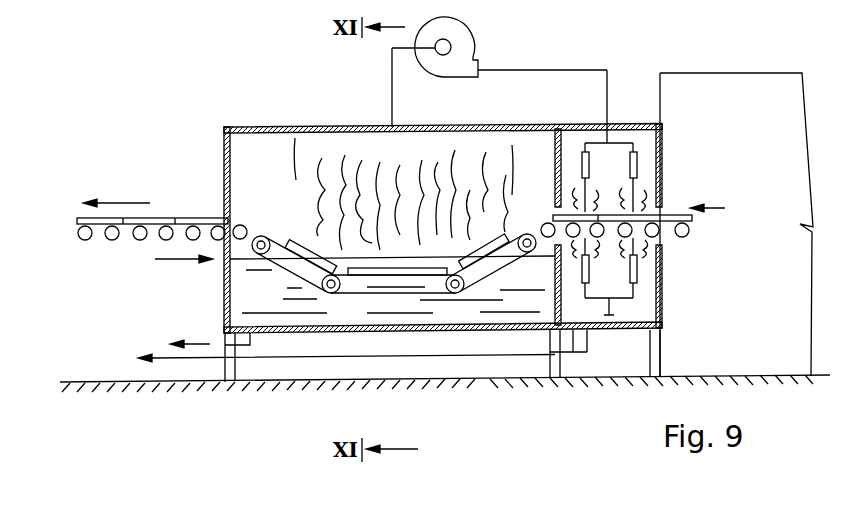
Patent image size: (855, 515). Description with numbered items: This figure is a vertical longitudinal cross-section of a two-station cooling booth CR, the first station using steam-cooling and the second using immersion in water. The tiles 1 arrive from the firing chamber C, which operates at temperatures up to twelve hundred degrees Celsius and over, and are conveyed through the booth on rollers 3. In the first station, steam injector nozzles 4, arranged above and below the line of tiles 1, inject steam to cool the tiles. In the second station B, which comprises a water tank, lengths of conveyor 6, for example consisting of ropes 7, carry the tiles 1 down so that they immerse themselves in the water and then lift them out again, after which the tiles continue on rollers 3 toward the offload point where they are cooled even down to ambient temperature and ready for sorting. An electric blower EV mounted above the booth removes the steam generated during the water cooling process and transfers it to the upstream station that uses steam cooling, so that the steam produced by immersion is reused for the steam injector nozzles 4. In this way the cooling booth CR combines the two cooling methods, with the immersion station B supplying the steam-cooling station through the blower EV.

The tiles 1 is at (163, 220).
The rollers 3 is at (85, 243).
The steam injector nozzles 4 is at (637, 163).
The lengths of conveyor 6 is at (476, 305).
The ropes 7 is at (368, 298).
The electric blower EV is at (512, 33).
The firing chamber C is at (776, 112).
The cooling booth CR is at (202, 40).
The station B is at (200, 402).